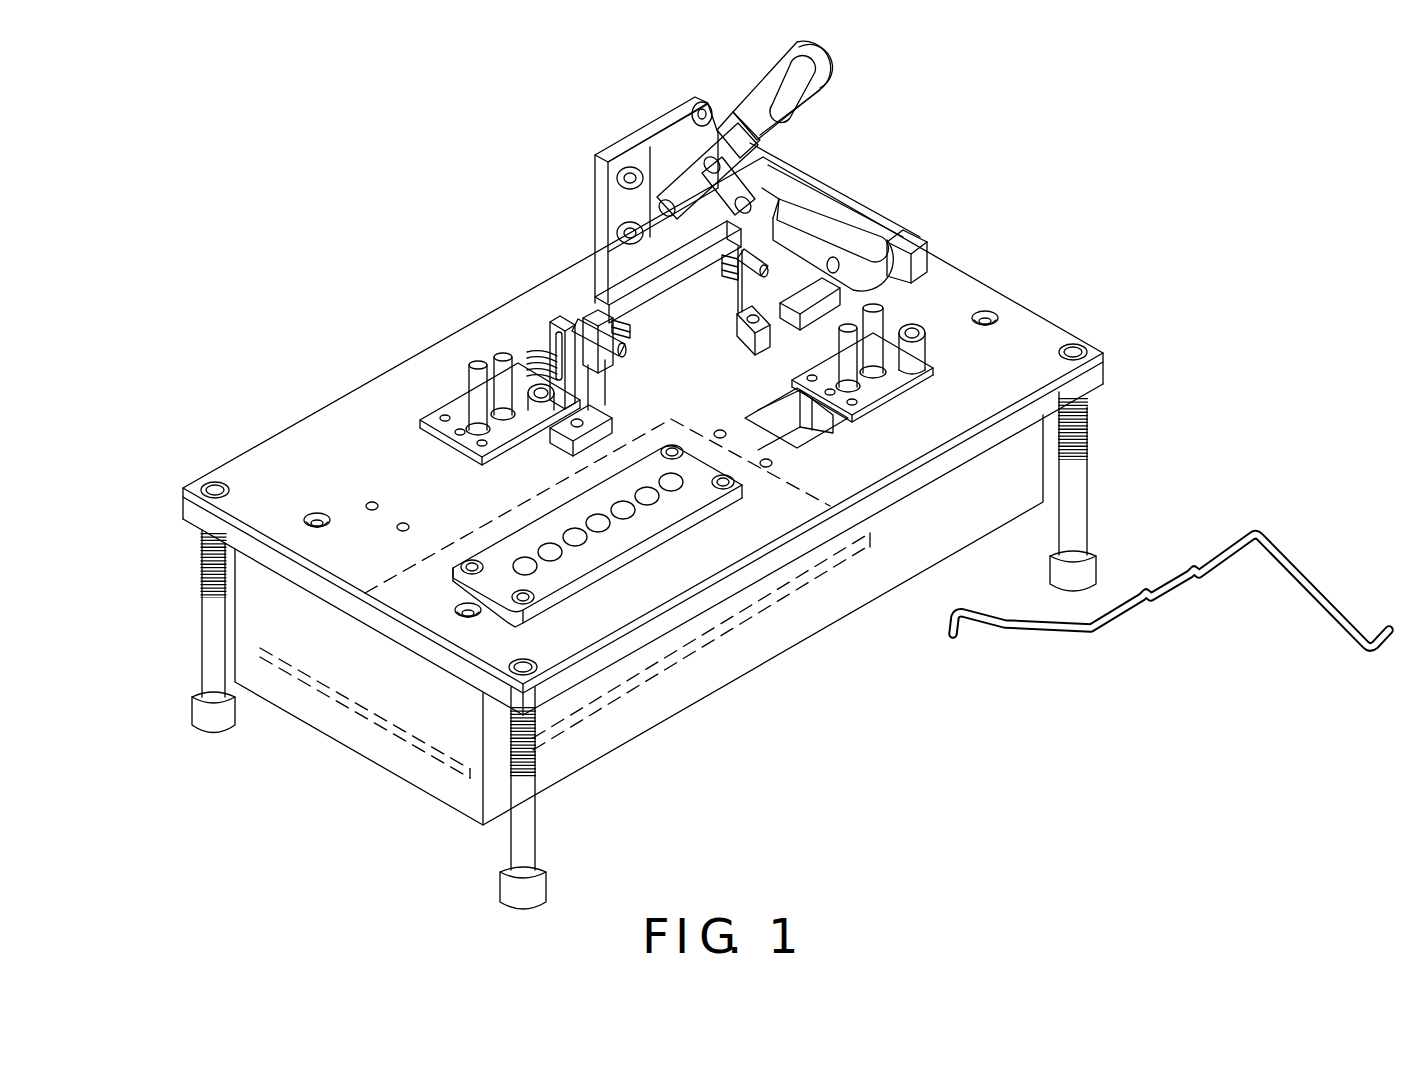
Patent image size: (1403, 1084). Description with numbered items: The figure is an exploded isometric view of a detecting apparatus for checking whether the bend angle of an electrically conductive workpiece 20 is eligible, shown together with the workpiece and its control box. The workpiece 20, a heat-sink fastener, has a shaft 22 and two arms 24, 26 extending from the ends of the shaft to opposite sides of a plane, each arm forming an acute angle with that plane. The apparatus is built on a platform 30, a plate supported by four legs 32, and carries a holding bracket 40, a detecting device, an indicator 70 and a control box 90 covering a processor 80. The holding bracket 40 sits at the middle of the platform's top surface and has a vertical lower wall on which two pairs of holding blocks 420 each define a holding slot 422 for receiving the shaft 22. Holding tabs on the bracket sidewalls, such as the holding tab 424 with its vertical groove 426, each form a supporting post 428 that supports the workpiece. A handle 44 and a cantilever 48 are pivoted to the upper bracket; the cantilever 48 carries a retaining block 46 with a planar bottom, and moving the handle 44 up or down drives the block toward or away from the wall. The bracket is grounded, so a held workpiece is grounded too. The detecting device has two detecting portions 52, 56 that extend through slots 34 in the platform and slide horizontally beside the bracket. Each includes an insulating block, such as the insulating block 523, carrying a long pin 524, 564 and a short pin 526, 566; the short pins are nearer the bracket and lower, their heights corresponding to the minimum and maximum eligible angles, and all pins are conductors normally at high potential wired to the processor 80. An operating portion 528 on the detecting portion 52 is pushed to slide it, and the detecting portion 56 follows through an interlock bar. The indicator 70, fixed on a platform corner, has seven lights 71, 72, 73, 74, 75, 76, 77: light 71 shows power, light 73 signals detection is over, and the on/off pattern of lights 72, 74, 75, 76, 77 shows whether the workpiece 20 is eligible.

The workpiece 20 is at (1171, 579).
The shaft 22 is at (1123, 609).
The arm 24 is at (1026, 624).
The arm 26 is at (1319, 598).
The platform 30 is at (318, 446).
The leg 32 is at (215, 640).
The slot 34 is at (790, 430).
The holding bracket 40 is at (681, 248).
The handle 44 is at (784, 95).
The retaining block 46 is at (898, 257).
The cantilever 48 is at (817, 228).
The detecting portion 52 is at (942, 347).
The detecting portion 56 is at (422, 389).
The indicator 70 is at (574, 548).
The light 71 is at (671, 483).
The light 72 is at (647, 497).
The light 73 is at (623, 511).
The light 74 is at (598, 525).
The light 75 is at (575, 538).
The light 76 is at (550, 553).
The light 77 is at (525, 566).
The processor 80 is at (372, 690).
The control box 90 is at (762, 642).
The holding block 420 is at (727, 273).
The holding slot 422 is at (585, 318).
The holding tab 424 is at (558, 338).
The vertical groove 426 is at (730, 260).
The supporting post 428 is at (752, 262).
The insulating block 523 is at (817, 412).
The long pin 524 is at (887, 328).
The short pin 526 is at (849, 373).
The operating portion 528 is at (905, 320).
The long pin 564 is at (470, 428).
The short pin 566 is at (483, 403).